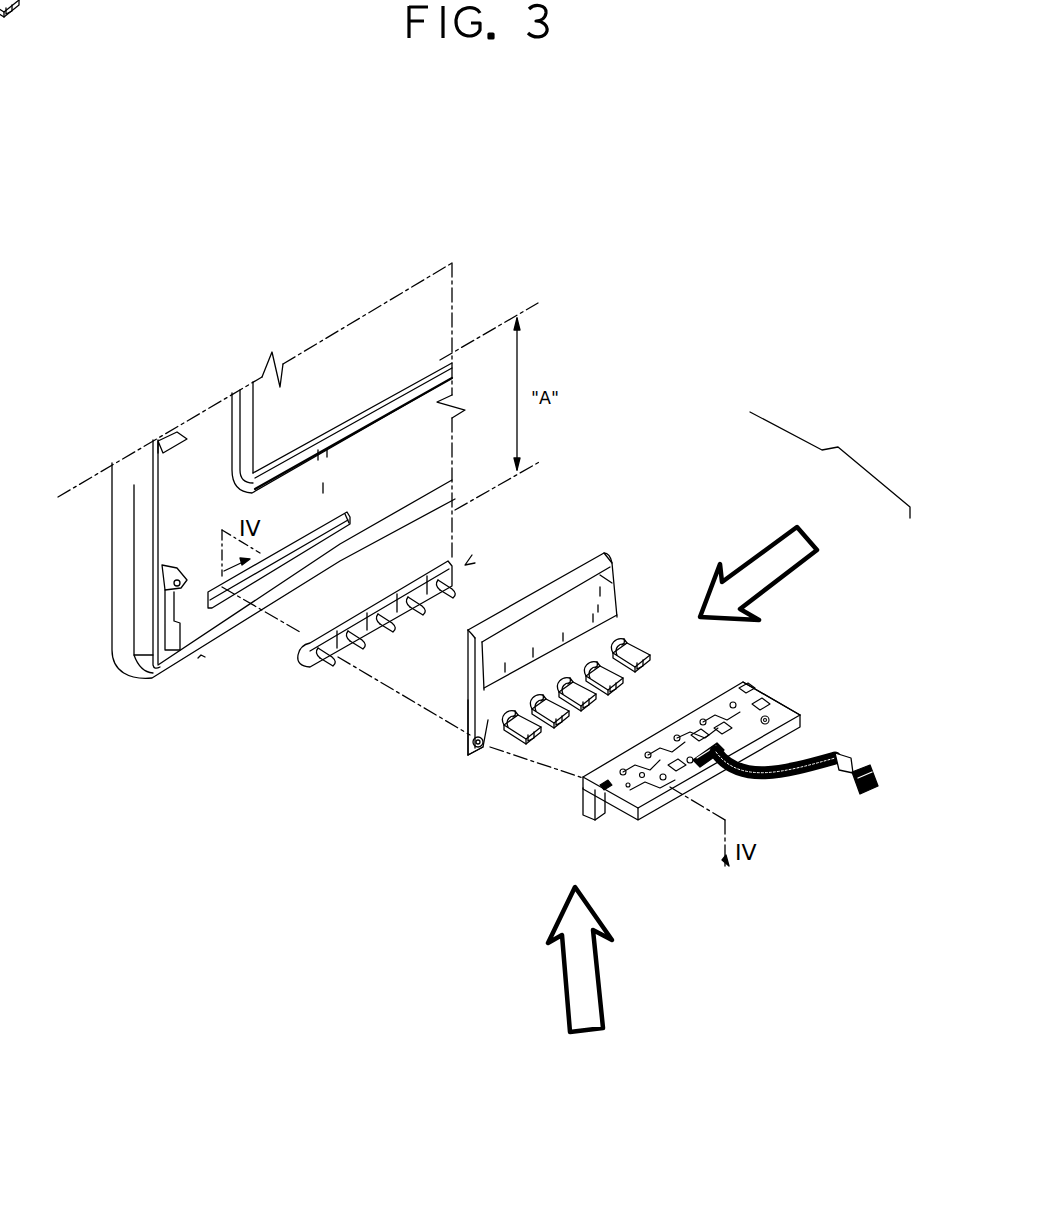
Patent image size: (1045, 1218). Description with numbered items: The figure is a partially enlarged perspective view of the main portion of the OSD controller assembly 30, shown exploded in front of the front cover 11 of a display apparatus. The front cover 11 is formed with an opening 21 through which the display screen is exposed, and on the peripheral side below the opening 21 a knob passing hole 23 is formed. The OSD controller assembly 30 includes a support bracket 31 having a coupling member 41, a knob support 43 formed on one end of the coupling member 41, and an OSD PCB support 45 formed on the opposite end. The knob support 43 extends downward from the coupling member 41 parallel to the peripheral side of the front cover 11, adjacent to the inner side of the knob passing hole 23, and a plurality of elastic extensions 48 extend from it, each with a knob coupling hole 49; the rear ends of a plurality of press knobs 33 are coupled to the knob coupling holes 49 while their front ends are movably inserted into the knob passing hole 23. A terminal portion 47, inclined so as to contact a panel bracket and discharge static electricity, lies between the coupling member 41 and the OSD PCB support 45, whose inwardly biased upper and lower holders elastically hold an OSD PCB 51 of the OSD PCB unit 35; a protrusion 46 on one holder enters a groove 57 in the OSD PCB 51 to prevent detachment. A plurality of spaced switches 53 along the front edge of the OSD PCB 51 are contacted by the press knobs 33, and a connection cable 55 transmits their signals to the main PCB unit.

The front cover 11 is at (123, 583).
The opening 21 is at (337, 419).
The knob passing hole 23 is at (347, 513).
The OSD controller assembly 30 is at (861, 446).
The support bracket 31 is at (617, 575).
The press knobs 33 is at (467, 564).
The OSD PCB unit 35 is at (784, 690).
The coupling member 41 is at (466, 682).
The knob support 43 is at (457, 733).
The OSD PCB support 45 is at (588, 667).
The protrusion 46 is at (603, 697).
The terminal portion 47 is at (618, 640).
The elastic extensions 48 is at (471, 750).
The knob coupling hole 49 is at (487, 752).
The OSD PCB 51 is at (778, 706).
The switches 53 is at (583, 817).
The connection cable 55 is at (830, 758).
The groove 57 is at (717, 742).